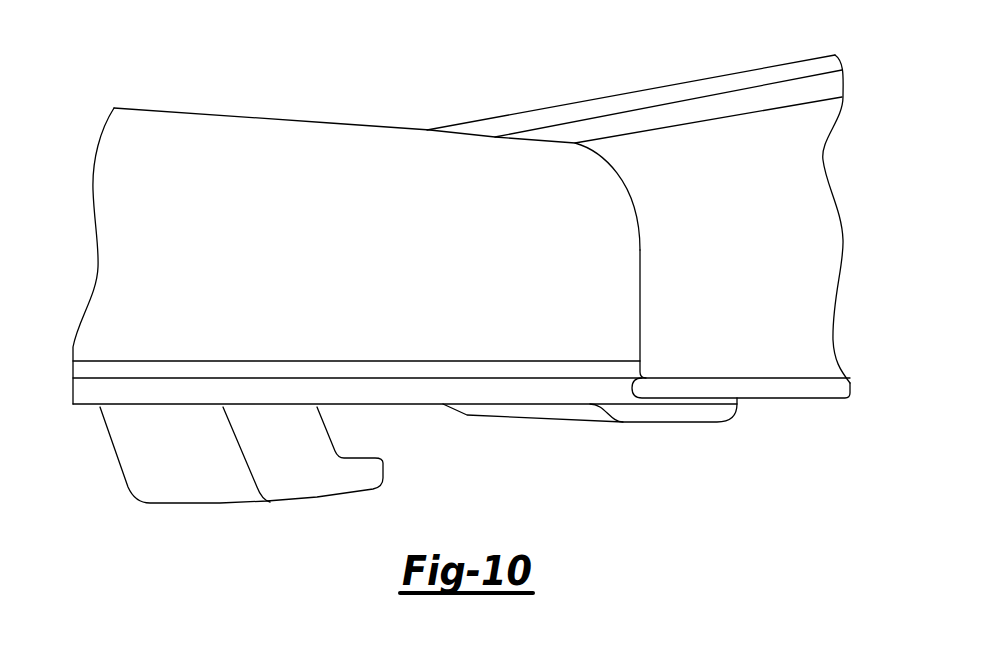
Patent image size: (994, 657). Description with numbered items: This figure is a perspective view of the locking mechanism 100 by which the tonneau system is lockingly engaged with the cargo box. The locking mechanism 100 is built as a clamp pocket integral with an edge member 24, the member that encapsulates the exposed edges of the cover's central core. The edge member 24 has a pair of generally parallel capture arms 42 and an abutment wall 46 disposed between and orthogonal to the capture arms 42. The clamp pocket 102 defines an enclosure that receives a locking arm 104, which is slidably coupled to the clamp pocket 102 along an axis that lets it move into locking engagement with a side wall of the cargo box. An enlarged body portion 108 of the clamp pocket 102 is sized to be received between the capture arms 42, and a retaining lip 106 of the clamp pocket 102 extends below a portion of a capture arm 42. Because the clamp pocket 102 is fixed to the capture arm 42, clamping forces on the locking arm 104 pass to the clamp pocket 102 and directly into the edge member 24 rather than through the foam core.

The locking mechanism 100 is at (142, 82).
The capture arm 42 is at (820, 68).
The abutment wall 46 is at (823, 250).
The enlarged body portion 108 is at (617, 292).
The edge member 24 is at (756, 347).
The clamp pocket 102 is at (403, 404).
The locking arm 104 is at (218, 503).
The retaining lip 106 is at (677, 427).